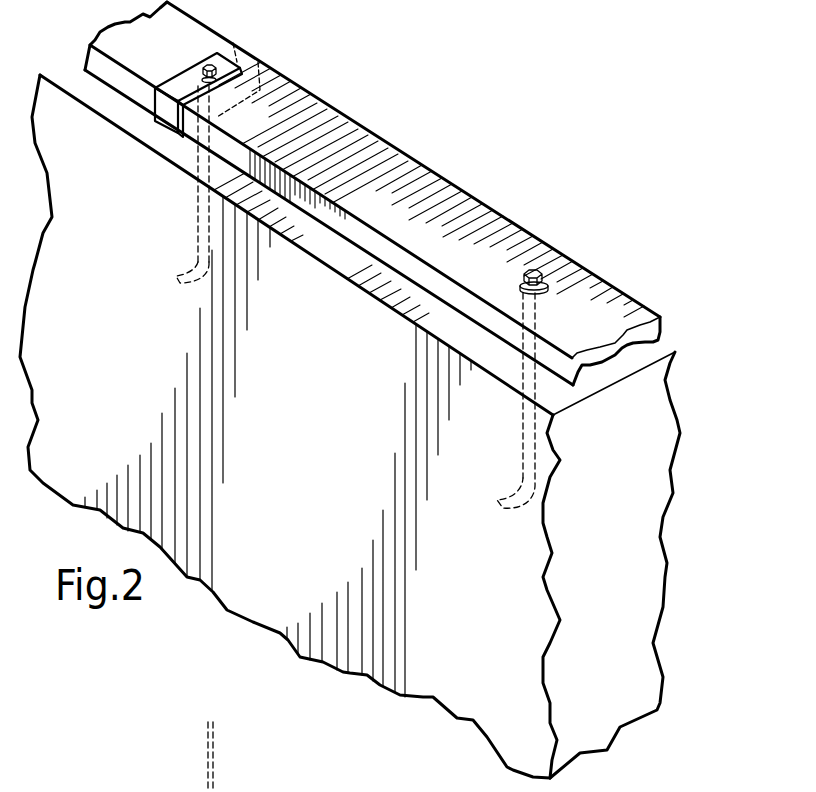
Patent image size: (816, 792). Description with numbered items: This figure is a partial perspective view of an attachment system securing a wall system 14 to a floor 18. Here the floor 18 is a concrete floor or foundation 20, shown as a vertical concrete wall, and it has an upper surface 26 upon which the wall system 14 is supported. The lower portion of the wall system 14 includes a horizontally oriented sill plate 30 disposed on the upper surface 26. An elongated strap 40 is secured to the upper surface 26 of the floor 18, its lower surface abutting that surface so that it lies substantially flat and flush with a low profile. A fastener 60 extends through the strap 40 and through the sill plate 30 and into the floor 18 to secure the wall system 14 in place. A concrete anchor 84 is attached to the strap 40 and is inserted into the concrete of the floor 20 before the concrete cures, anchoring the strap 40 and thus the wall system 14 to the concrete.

The wall system 14 is at (430, 168).
The floor 18 is at (324, 523).
The concrete floor or foundation 20 is at (637, 590).
The upper surface 26 is at (660, 353).
The sill plate 30 is at (618, 305).
The strap 40 is at (167, 80).
The fastener 60 is at (217, 62).
The concrete anchor 84 is at (198, 235).